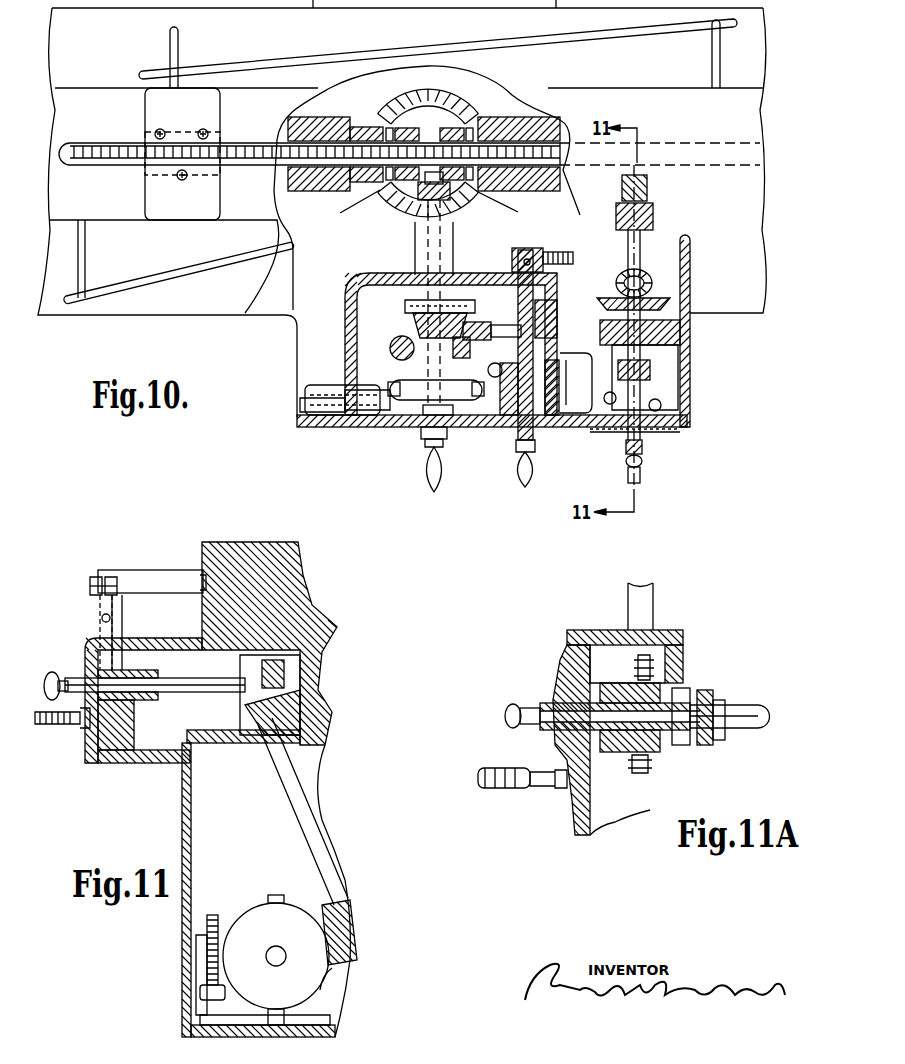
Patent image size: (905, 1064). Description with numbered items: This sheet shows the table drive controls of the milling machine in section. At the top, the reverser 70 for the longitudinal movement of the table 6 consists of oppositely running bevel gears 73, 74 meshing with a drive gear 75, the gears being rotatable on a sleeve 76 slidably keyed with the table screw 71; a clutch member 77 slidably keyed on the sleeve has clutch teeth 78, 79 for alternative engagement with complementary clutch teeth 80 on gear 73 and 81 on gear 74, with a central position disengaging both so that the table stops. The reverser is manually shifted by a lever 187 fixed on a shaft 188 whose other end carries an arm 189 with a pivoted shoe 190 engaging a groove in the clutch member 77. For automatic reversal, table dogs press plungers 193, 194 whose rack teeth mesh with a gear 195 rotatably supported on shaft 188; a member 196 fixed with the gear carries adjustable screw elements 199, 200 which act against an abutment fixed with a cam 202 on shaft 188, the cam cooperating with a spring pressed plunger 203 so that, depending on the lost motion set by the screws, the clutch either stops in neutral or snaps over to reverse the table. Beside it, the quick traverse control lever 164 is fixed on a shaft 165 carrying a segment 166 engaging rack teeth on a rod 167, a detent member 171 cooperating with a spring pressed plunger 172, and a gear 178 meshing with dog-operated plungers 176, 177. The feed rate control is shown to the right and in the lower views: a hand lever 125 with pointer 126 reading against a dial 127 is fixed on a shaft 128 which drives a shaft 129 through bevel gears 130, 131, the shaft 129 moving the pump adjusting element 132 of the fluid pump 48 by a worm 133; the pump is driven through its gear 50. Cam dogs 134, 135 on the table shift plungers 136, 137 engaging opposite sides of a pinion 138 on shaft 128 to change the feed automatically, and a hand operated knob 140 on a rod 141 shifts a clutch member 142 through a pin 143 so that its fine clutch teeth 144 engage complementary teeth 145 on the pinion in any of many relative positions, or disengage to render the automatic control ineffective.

In FIG. 11, the table 6 is at (245, 545).
In FIG. 11, the fluid pump 48 is at (305, 975).
In FIG. 11, the gear 50 is at (212, 915).
In FIG. 10, the reverser 70 is at (428, 116).
In FIG. 10, the table screw 71 is at (245, 167).
In FIG. 10, the bevel gear 73 is at (358, 124).
In FIG. 10, the bevel gear 74 is at (143, 172).
In FIG. 10, the drive gear 75 is at (382, 205).
In FIG. 10, the sleeve 76 is at (288, 135).
In FIG. 10, the clutch member 77 is at (480, 202).
In FIG. 10, the clutch teeth 78 is at (425, 104).
In FIG. 10, the clutch teeth 79 is at (450, 108).
In FIG. 10, the clutch teeth 80 is at (395, 118).
In FIG. 10, the clutch teeth 81 is at (485, 110).
In FIG. 10, the hand lever 125 is at (642, 466).
In FIG. 11, the hand lever 125 is at (78, 726).
In FIG. 11A, the hand lever 125 is at (555, 790).
In FIG. 10, the pointer 126 is at (680, 433).
In FIG. 11A, the pointer 126 is at (553, 660).
In FIG. 11A, the dial 127 is at (567, 632).
In FIG. 10, the shaft 128 is at (690, 340).
In FIG. 11, the shaft 128 is at (172, 695).
In FIG. 11A, the shaft 128 is at (748, 705).
In FIG. 10, the shaft 129 is at (655, 240).
In FIG. 11, the shaft 129 is at (290, 798).
In FIG. 10, the bevel gear 130 is at (650, 298).
In FIG. 11, the bevel gear 130 is at (262, 672).
In FIG. 10, the bevel gear 131 is at (645, 270).
In FIG. 11, the bevel gear 131 is at (290, 686).
In FIG. 11, the pump adjusting element 132 is at (348, 962).
In FIG. 10, the worm 133 is at (648, 188).
In FIG. 11, the worm 133 is at (355, 916).
In FIG. 11, the cam dog 134 is at (132, 570).
In FIG. 11, the cam dog 135 is at (96, 577).
In FIG. 10, the plunger 136 is at (618, 380).
In FIG. 11, the plunger 136 is at (122, 632).
In FIG. 11A, the plunger 136 is at (654, 600).
In FIG. 10, the plunger 137 is at (665, 394).
In FIG. 11, the plunger 137 is at (100, 620).
In FIG. 10, the pinion 138 is at (610, 404).
In FIG. 11, the pinion 138 is at (125, 670).
In FIG. 11A, the pinion 138 is at (610, 683).
In FIG. 11, the hand operated knob 140 is at (52, 672).
In FIG. 11A, the hand operated knob 140 is at (508, 705).
In FIG. 11A, the rod 141 is at (540, 710).
In FIG. 11A, the clutch member 142 is at (713, 740).
In FIG. 11A, the key or pin 143 is at (705, 690).
In FIG. 11A, the clutch teeth 144 is at (688, 690).
In FIG. 11A, the clutch teeth 145 is at (680, 683).
In FIG. 10, the lever 164 is at (512, 475).
In FIG. 10, the shaft 165 is at (533, 345).
In FIG. 10, the segment 166 is at (545, 240).
In FIG. 10, the rod 167 is at (573, 258).
In FIG. 10, the cam or detent member 171 is at (546, 296).
In FIG. 10, the spring pressed plunger 172 is at (486, 322).
In FIG. 10, the plunger 176 is at (495, 363).
In FIG. 10, the plunger 177 is at (565, 405).
In FIG. 10, the gear 178 is at (550, 350).
In FIG. 10, the lever 187 is at (425, 460).
In FIG. 10, the shaft 188 is at (428, 297).
In FIG. 10, the arm or lever 189 is at (420, 200).
In FIG. 10, the pivoted shoe 190 is at (448, 182).
In FIG. 10, the plunger 193 is at (412, 330).
In FIG. 10, the plunger 194 is at (468, 360).
In FIG. 10, the gear 195 is at (392, 350).
In FIG. 10, the member 196 is at (455, 412).
In FIG. 10, the adjustable screw element 199 is at (394, 382).
In FIG. 10, the adjustable screw element 200 is at (482, 396).
In FIG. 10, the cam or detent 202 is at (450, 430).
In FIG. 10, the spring pressed plunger 203 is at (380, 428).